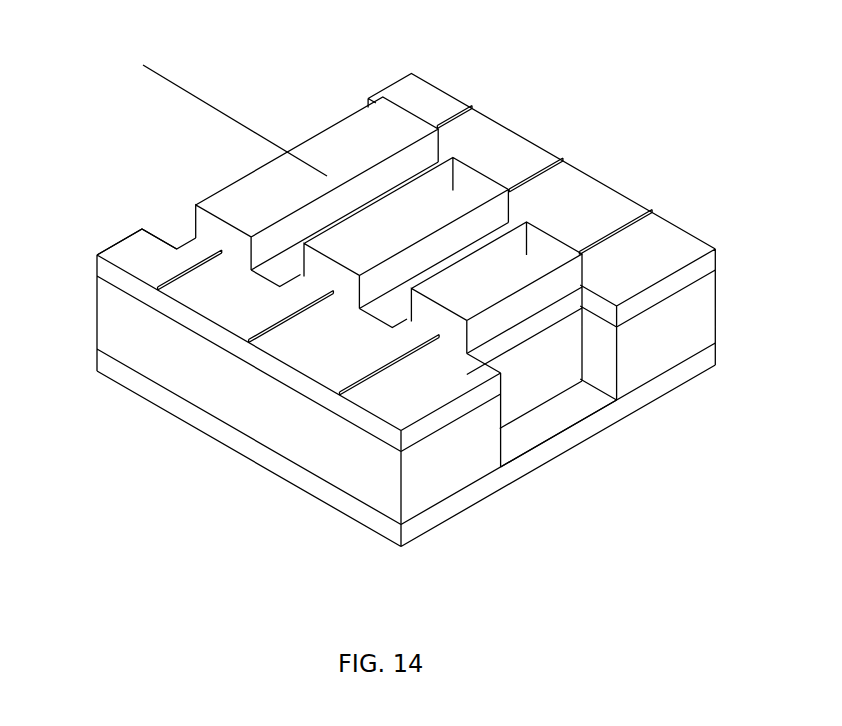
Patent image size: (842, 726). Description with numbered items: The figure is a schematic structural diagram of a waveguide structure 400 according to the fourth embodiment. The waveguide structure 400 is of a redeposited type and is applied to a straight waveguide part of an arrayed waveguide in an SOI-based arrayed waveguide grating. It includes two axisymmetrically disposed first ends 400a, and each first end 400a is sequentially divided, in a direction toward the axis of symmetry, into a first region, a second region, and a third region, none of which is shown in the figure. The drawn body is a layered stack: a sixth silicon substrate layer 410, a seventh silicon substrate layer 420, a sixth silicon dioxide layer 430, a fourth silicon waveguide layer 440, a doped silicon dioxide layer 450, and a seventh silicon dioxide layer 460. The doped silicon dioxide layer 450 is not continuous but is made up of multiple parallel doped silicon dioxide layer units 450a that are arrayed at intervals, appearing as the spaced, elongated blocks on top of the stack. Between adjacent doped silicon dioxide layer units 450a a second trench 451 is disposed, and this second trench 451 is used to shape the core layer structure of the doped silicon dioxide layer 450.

The waveguide structure 400 is at (384, 31).
The first end 400a is at (111, 229).
The sixth silicon substrate layer 410 is at (417, 527).
The seventh silicon substrate layer 420 is at (427, 485).
The sixth silicon dioxide layer 430 is at (513, 452).
The fourth silicon waveguide layer 440 is at (320, 367).
The doped silicon dioxide layer 450 is at (528, 330).
The doped silicon dioxide layer unit 450a is at (222, 212).
The second trench 451 is at (302, 230).
The seventh silicon dioxide layer 460 is at (528, 422).